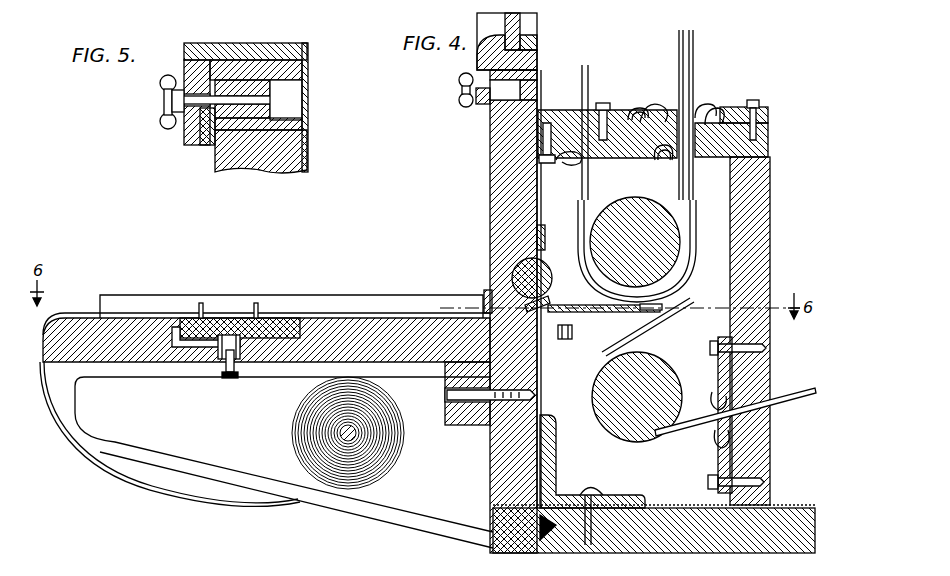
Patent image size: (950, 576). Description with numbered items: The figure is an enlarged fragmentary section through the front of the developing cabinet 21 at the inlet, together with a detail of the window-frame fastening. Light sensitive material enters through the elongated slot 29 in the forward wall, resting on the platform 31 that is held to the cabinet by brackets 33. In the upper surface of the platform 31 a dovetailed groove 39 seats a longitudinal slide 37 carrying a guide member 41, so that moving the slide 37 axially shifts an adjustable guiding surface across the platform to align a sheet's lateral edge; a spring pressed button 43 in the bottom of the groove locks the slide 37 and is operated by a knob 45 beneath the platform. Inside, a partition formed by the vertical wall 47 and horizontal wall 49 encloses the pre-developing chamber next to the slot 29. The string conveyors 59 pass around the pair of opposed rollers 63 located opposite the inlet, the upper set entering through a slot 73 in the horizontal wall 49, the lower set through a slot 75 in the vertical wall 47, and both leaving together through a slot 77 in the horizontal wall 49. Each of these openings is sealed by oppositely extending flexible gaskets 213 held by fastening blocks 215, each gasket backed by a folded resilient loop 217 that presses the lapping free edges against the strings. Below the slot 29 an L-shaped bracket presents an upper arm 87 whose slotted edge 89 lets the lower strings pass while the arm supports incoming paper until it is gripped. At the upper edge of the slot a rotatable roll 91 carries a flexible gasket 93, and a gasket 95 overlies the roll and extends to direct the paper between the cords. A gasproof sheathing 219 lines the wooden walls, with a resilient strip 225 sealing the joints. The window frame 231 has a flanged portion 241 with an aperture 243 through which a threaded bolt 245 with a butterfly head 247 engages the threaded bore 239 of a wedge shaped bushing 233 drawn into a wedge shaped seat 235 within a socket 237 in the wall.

In FIG. 4, the cabinet 21 is at (494, 173).
In FIG. 4, the slot 29 is at (492, 293).
In FIG. 4, the platform 31 is at (120, 364).
In FIG. 4, the brackets 33 is at (335, 505).
In FIG. 4, the longitudinal slide 37 is at (228, 318).
In FIG. 4, the dovetailed groove 39 is at (177, 345).
In FIG. 4, the guide member 41 is at (118, 296).
In FIG. 4, the spring pressed button 43 is at (215, 348).
In FIG. 4, the knob 45 is at (228, 378).
In FIG. 4, the vertical wall 47 is at (771, 213).
In FIG. 4, the horizontal wall 49 is at (712, 152).
In FIG. 4, the conveyors 59 is at (800, 396).
In FIG. 4, the rollers 63 is at (682, 240).
In FIG. 4, the slot 73 is at (556, 158).
In FIG. 4, the slot 75 is at (772, 376).
In FIG. 4, the slot 77 is at (664, 160).
In FIG. 4, the upper arm 87 is at (565, 339).
In FIG. 4, the slot 89 is at (652, 311).
In FIG. 4, the rotatable roll 91 is at (512, 268).
In FIG. 4, the flexible gasket 93 is at (548, 298).
In FIG. 4, the gasket 95 is at (587, 313).
In FIG. 4, the flexible gaskets 213 is at (662, 100).
In FIG. 4, the fastening blocks 215 is at (603, 103).
In FIG. 4, the loop 217 is at (652, 104).
In FIG. 4, the sheathing 219 is at (539, 100).
In FIG. 5, the sheathing 219 is at (308, 143).
In FIG. 4, the strip 225 is at (540, 527).
In FIG. 4, the frames 231 is at (538, 22).
In FIG. 5, the frames 231 is at (230, 43).
In FIG. 5, the wedge shaped bushing 233 is at (306, 122).
In FIG. 5, the wedge shaped seat 235 is at (245, 130).
In FIG. 5, the socket 237 is at (292, 97).
In FIG. 5, the threaded longitudinal bore 239 is at (306, 70).
In FIG. 5, the flanged portion 241 is at (186, 142).
In FIG. 5, the aperture 243 is at (206, 148).
In FIG. 5, the threaded bolt 245 is at (246, 95).
In FIG. 5, the butterfly head 247 is at (165, 120).